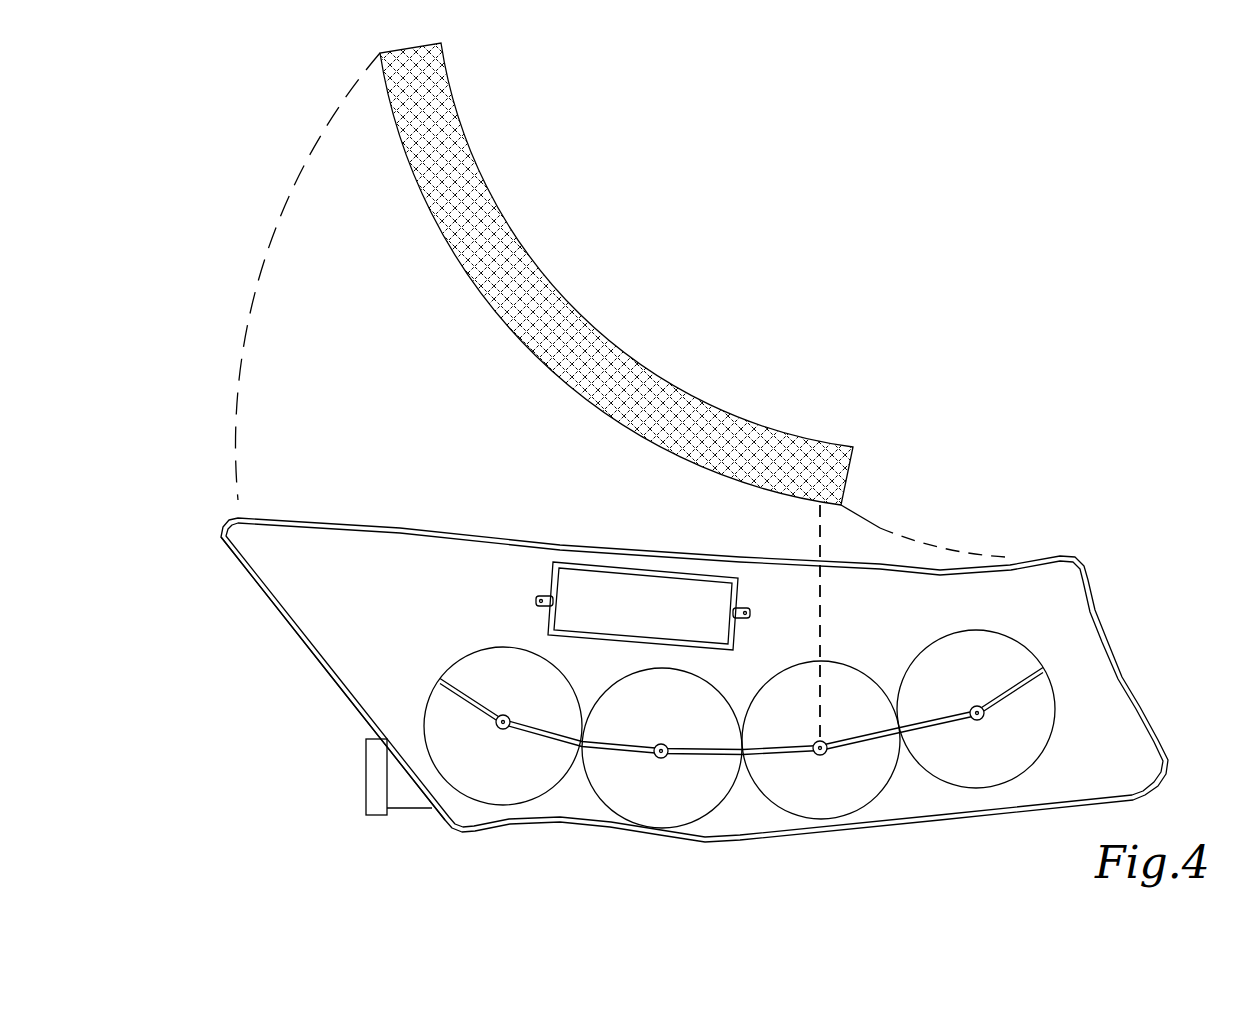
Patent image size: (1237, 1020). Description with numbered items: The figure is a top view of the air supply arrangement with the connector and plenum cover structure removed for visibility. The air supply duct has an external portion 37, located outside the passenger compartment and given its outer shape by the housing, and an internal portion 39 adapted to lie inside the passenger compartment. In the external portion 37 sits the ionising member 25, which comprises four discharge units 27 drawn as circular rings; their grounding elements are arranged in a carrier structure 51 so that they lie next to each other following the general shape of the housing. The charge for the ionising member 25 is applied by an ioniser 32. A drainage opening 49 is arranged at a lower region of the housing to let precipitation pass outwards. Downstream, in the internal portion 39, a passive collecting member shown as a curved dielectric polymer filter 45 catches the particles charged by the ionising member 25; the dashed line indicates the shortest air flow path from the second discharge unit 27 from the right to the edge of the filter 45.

The ionising member 25 is at (1143, 615).
The discharge unit 27 is at (579, 812).
The ioniser 32 is at (655, 624).
The external portion 37 is at (292, 687).
The internal portion 39 is at (463, 432).
The dielectric polymer filter 45 is at (518, 275).
The drainage opening 49 is at (380, 769).
The carrier structure 51 is at (413, 628).